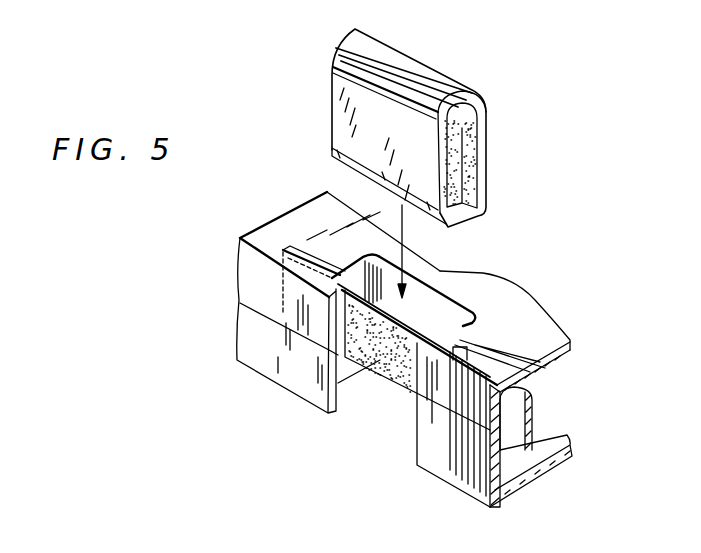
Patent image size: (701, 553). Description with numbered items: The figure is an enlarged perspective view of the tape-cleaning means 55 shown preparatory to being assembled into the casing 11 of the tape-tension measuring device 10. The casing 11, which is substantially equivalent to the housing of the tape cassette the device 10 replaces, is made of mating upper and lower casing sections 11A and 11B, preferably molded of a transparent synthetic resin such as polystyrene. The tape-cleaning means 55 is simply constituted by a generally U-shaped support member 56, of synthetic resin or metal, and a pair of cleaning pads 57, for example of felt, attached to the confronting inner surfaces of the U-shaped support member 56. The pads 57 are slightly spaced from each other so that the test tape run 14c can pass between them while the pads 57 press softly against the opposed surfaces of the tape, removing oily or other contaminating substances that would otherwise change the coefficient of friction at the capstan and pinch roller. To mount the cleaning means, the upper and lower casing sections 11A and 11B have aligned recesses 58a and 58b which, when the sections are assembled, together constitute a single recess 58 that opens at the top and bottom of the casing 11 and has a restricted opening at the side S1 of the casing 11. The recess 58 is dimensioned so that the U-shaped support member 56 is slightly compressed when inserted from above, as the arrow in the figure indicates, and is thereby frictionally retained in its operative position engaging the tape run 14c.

The tape-tension measuring device 10 is at (430, 346).
The casing 11 is at (296, 211).
The upper casing section 11A is at (520, 317).
The lower casing section 11B is at (533, 480).
The test tape run 14c is at (392, 383).
The tape-cleaning means 55 is at (441, 128).
The U-shaped support member 56 is at (417, 70).
The cleaning pads 57 is at (452, 176).
The recess 58 is at (403, 430).
The recess of upper casing section 58a is at (440, 298).
The recess of lower casing section 58b is at (358, 390).
The side of casing S1 is at (283, 394).